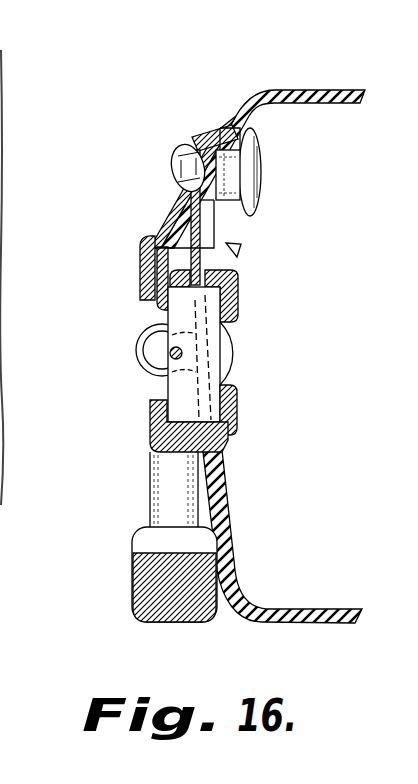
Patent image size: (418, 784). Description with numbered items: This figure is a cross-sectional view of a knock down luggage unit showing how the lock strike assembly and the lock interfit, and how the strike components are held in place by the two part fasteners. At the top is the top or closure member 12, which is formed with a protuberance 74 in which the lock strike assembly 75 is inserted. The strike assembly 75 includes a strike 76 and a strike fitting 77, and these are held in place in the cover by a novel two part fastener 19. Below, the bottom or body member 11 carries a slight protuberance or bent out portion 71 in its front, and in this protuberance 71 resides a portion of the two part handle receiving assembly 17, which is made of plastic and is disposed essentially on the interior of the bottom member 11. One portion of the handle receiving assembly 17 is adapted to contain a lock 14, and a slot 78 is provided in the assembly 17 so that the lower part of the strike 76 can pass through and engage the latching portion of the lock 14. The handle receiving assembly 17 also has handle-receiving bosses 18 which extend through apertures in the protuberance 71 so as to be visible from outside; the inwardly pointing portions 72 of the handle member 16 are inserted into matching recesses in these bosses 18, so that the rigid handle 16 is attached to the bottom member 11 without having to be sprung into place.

The bottom or body member 11 is at (328, 611).
The top or closure member 12 is at (344, 91).
The lock 14 is at (233, 360).
The handle member 16 is at (148, 612).
The two part handle receiving assembly 17 is at (237, 402).
The handle-receiving bosses 18 is at (143, 352).
The two part fastener 19 is at (174, 166).
The protuberance or bent out portion 71 is at (151, 402).
The inwardly pointing portions of the handle 72 is at (172, 352).
The protuberance in the cover member 74 is at (208, 130).
The lock strike assembly 75 is at (239, 250).
The strike 76 is at (205, 257).
The strike fitting 77 is at (215, 212).
The slot 78 is at (160, 236).